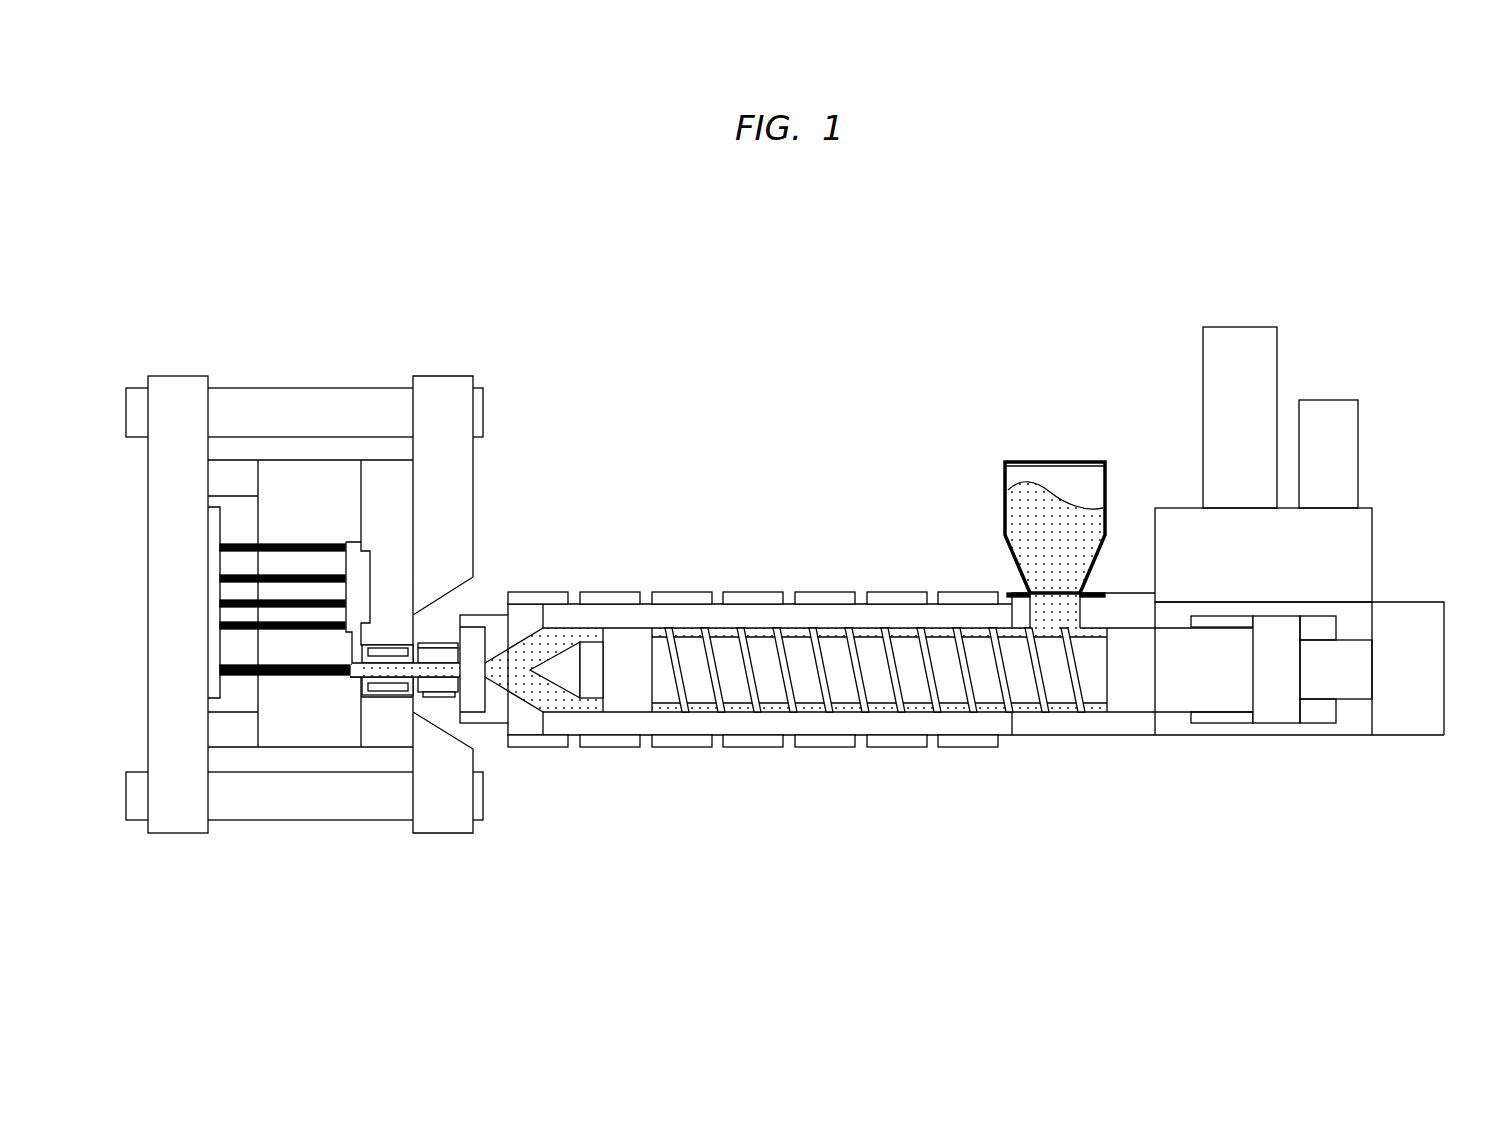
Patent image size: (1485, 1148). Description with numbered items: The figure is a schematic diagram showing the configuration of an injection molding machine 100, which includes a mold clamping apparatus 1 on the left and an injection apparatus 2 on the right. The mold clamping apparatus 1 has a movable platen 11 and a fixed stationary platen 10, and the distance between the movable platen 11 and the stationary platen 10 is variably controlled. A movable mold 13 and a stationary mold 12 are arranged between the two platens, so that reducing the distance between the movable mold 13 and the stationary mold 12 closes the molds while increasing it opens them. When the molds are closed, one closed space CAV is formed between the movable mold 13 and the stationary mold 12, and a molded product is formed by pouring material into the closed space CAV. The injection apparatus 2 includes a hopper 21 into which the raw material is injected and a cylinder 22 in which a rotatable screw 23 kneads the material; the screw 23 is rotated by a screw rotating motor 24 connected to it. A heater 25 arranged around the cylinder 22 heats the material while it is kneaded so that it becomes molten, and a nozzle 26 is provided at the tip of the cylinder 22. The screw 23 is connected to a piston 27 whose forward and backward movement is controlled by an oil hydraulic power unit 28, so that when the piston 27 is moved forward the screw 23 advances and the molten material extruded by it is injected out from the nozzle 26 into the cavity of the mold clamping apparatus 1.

The injection molding machine 100 is at (1307, 272).
The mold clamping apparatus 1 is at (407, 268).
The injection apparatus 2 is at (1359, 780).
The stationary platen 10 is at (441, 376).
The movable platen 11 is at (185, 376).
The stationary mold 12 is at (386, 460).
The movable mold 13 is at (310, 617).
The closed space (cavity) CAV is at (352, 613).
The hopper 21 is at (1004, 482).
The cylinder 22 is at (648, 735).
The screw 23 is at (843, 693).
The screw rotating motor 24 is at (1420, 602).
The heater 25 is at (681, 592).
The nozzle 26 is at (432, 700).
The piston 27 is at (1276, 735).
The oil hydraulic power unit 28 is at (1180, 508).